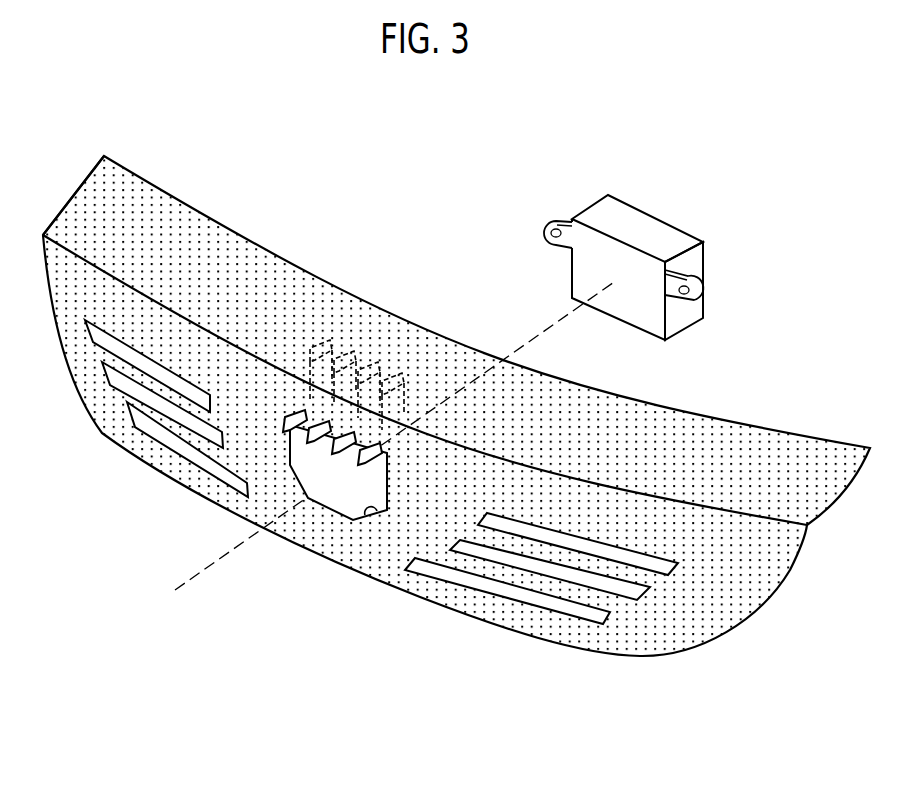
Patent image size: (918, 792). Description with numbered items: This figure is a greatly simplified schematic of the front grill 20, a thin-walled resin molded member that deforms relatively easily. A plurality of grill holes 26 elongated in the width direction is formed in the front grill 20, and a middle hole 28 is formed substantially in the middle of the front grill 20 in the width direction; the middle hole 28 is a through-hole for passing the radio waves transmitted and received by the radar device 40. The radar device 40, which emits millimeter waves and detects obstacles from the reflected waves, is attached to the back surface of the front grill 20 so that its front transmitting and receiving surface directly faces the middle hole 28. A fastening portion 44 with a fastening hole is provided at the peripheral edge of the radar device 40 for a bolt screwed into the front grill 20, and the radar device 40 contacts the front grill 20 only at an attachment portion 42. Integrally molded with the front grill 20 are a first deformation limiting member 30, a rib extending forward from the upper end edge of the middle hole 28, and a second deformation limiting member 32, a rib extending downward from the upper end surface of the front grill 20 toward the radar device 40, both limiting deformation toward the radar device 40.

The front grill 20 is at (805, 460).
The grill holes 26 is at (130, 360).
The middle hole 28 is at (367, 510).
The first deformation limiting member 30 is at (308, 422).
The second deformation limiting member 32 is at (408, 350).
The radar device 40 is at (645, 235).
The attachment portion 42 is at (642, 310).
The fastening portion 44 is at (552, 217).